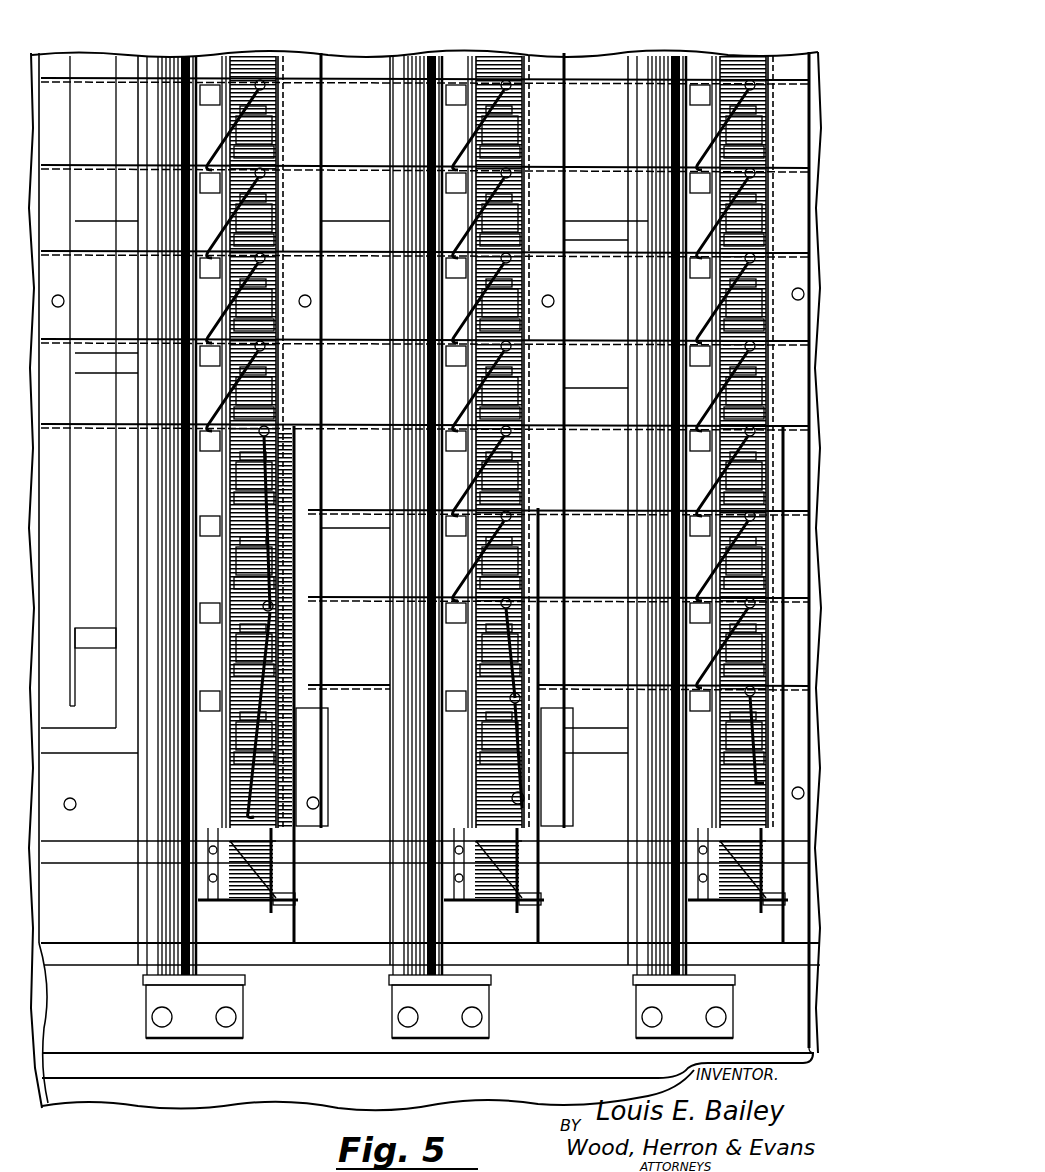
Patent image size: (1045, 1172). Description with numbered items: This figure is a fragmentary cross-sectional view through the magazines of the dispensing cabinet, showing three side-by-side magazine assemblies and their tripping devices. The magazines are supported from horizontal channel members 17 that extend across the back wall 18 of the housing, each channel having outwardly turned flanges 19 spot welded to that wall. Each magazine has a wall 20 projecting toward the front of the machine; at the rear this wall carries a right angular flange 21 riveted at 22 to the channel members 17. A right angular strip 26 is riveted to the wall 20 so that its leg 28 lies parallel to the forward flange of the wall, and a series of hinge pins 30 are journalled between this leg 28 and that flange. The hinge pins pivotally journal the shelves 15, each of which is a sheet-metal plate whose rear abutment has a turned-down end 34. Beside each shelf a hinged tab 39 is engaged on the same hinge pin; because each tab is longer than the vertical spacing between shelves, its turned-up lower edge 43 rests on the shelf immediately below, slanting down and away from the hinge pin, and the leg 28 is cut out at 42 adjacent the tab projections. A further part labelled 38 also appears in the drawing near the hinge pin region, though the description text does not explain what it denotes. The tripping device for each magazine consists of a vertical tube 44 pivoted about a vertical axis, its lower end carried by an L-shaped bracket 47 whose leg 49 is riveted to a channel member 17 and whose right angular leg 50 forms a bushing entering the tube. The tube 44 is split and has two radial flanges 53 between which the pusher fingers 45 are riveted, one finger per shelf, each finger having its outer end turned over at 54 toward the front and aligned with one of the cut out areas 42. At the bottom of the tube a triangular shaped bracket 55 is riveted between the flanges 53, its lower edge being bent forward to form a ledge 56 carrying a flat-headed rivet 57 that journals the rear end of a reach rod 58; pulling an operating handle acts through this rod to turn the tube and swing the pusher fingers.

The shelf 15 is at (98, 73).
The channel member 17 is at (100, 732).
The back wall 18 is at (252, 1118).
The outwardly turned flange 19 is at (82, 720).
The wall 20 is at (36, 54).
The right angular flange 21 is at (62, 114).
The rivet 22 is at (50, 287).
The right angular strip 26 is at (276, 126).
The leg of right angular strip 28 is at (246, 48).
The hinge pin 30 is at (270, 70).
The turned-down end of abutment 34 is at (200, 86).
The mounting box 38 is at (230, 50).
The hinged tab 39 is at (262, 100).
The cut out area 42 is at (266, 208).
The lower edge of hinged tab 43 is at (760, 770).
The vertical tube 44 is at (142, 54).
The pusher finger 45 is at (262, 120).
The lower bracket 47 is at (131, 1008).
The leg of bracket 49 is at (238, 1024).
The right angular leg of bracket 50 is at (238, 972).
The radial flange 53 is at (192, 48).
The turned-over outer end of pusher finger 54 is at (262, 104).
The triangular shaped bracket 55 is at (240, 890).
The ledge 56 is at (272, 898).
The flat-headed rivet 57 is at (278, 876).
The reach rod 58 is at (280, 888).